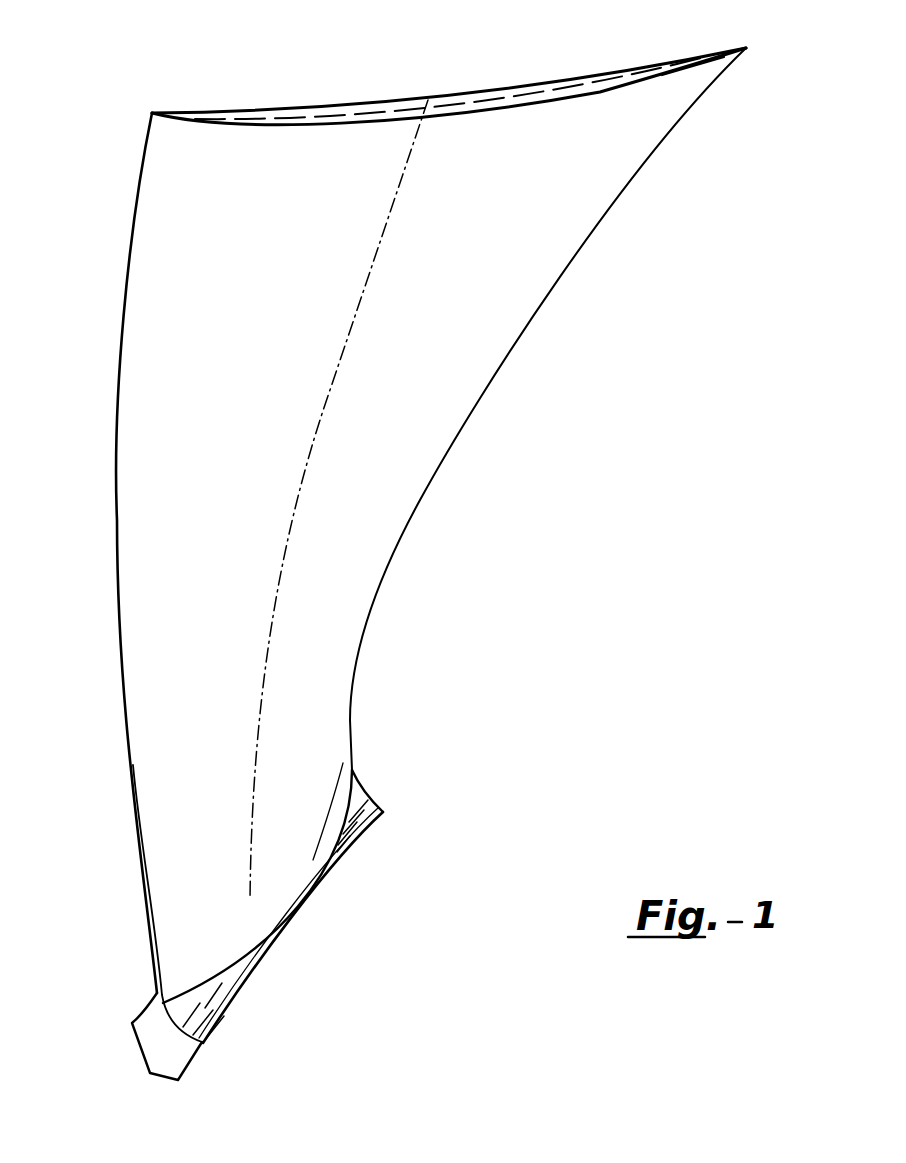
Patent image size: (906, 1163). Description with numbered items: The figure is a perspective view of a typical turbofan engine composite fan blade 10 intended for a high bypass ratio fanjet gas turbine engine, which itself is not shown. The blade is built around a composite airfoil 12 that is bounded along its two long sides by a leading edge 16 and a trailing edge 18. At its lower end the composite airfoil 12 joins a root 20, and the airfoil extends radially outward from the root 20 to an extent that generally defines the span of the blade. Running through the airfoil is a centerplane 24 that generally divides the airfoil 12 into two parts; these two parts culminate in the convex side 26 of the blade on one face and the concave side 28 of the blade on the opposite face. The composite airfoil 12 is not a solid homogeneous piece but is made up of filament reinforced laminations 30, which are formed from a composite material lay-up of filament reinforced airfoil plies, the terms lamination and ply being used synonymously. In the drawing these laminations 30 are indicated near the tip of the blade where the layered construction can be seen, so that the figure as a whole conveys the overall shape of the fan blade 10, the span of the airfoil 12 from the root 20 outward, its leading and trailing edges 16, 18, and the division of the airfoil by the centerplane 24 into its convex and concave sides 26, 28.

The composite fan blade 10 is at (429, 540).
The composite airfoil 12 is at (395, 545).
The leading edge 16 is at (120, 336).
The trailing edge 18 is at (567, 268).
The root 20 is at (225, 1020).
The centerplane 24 is at (547, 92).
The convex side 26 is at (662, 95).
The concave side 28 is at (495, 90).
The filament reinforced laminations 30 is at (318, 112).